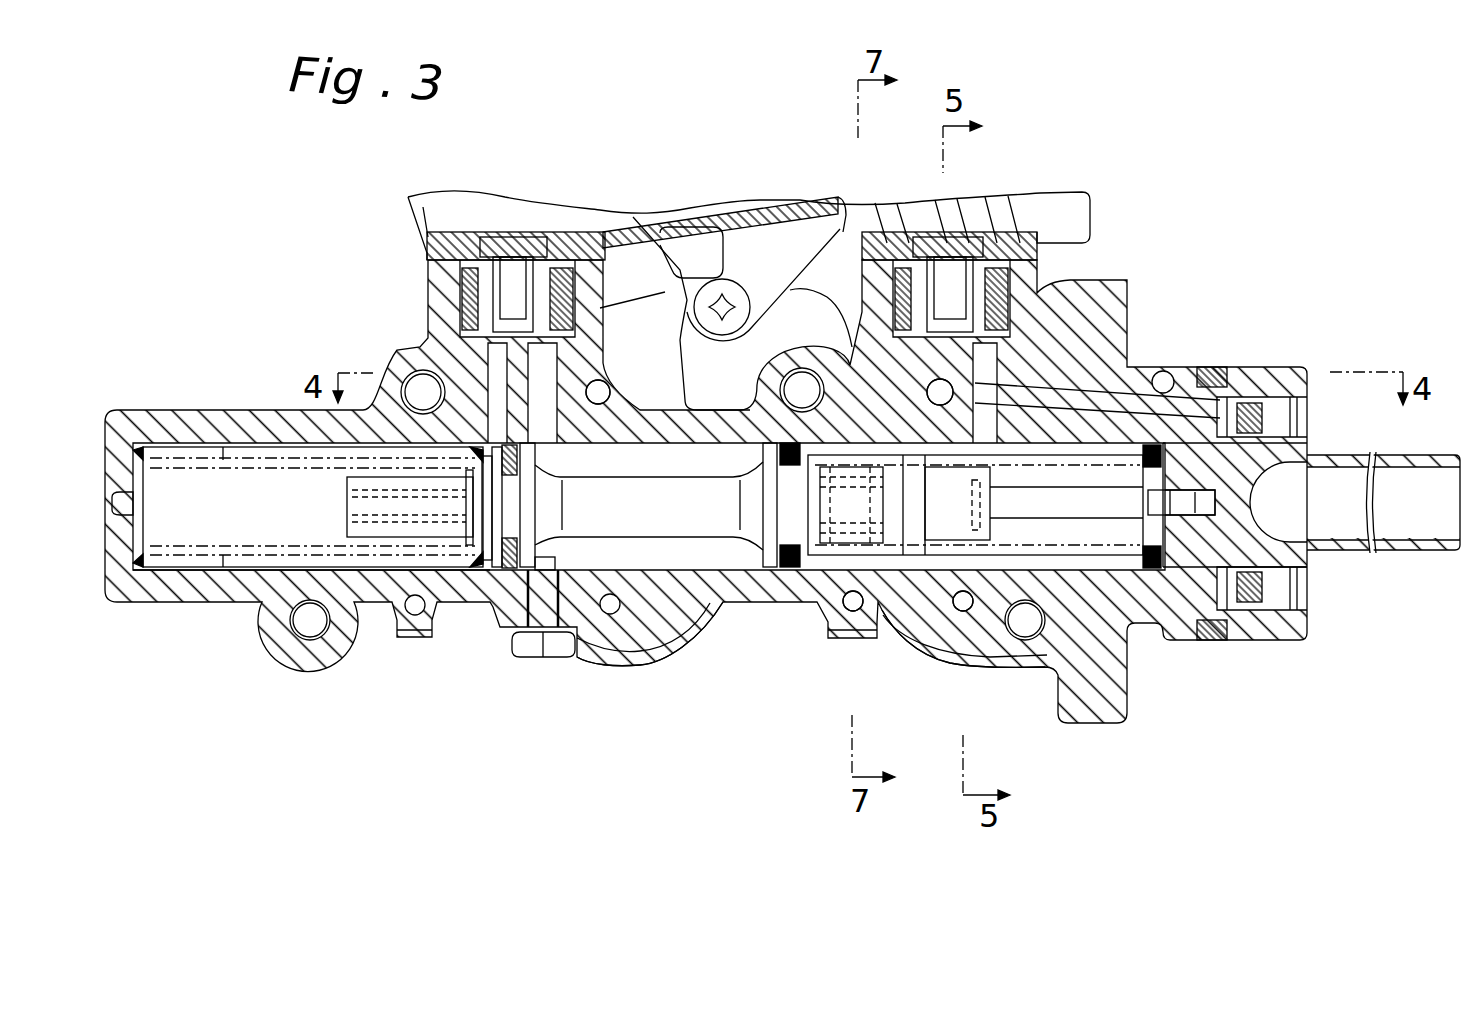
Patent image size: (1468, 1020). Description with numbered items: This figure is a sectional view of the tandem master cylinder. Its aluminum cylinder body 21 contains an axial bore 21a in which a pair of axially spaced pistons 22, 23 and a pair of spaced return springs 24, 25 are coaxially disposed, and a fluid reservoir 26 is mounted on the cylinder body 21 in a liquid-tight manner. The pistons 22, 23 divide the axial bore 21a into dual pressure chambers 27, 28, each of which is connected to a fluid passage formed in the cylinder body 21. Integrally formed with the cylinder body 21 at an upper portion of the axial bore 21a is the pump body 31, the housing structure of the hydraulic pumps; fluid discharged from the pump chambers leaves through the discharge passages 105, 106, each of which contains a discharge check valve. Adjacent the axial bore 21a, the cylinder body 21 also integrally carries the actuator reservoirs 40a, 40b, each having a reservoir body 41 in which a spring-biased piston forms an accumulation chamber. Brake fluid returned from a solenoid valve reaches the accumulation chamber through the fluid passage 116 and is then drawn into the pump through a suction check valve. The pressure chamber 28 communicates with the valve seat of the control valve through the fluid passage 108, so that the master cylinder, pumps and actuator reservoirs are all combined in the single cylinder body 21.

The cylinder body 21 is at (165, 592).
The axial bore 21a is at (250, 572).
The piston 22 is at (713, 517).
The piston 23 is at (1333, 550).
The return spring 24 is at (478, 560).
The return spring 25 is at (1145, 558).
The fluid reservoir 26 is at (423, 228).
The pressure chamber 27 is at (254, 483).
The pressure chamber 28 is at (815, 448).
The pump body 31 is at (686, 297).
The actuator reservoir 40a is at (602, 661).
The actuator reservoir 40b is at (893, 648).
The reservoir body 41 is at (665, 625).
The discharge passage 105 is at (606, 382).
The discharge passage 106 is at (847, 347).
The fluid passage 108 is at (845, 607).
The fluid passage 116 is at (961, 612).